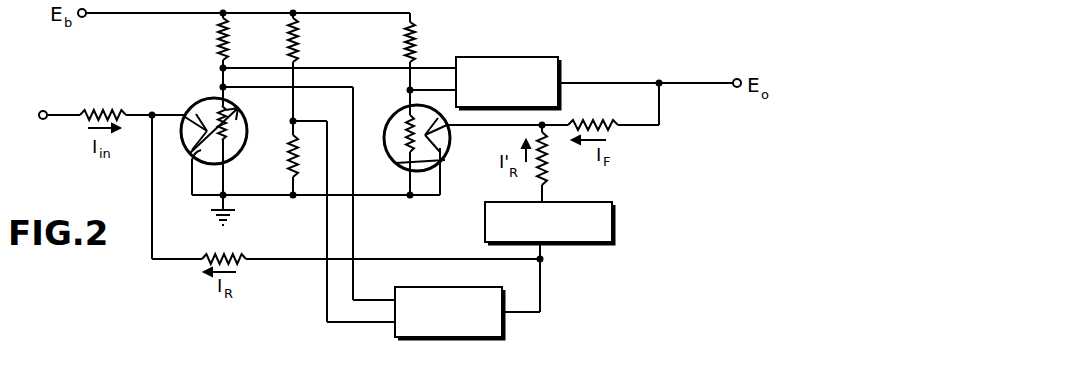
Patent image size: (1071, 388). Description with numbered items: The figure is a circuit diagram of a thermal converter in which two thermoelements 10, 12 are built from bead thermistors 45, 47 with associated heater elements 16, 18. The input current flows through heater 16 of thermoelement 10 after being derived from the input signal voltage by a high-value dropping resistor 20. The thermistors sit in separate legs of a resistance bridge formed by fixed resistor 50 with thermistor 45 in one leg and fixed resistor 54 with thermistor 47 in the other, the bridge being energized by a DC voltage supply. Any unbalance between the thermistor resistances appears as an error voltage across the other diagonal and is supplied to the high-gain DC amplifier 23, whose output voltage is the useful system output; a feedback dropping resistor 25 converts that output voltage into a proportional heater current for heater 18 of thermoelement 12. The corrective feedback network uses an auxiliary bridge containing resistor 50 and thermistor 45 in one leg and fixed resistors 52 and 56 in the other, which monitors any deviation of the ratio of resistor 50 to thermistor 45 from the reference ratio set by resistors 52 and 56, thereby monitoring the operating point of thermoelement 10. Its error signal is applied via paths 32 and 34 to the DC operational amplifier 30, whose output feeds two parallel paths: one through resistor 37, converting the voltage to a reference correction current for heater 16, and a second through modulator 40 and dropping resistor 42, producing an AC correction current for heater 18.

The thermoelement 10 is at (192, 101).
The thermoelement 12 is at (385, 125).
The heater 16 is at (190, 160).
The heater 18 is at (446, 152).
The dropping resistor 20 is at (104, 110).
The DC high-gain amplifier 23 is at (492, 57).
The feedback dropping resistor 25 is at (585, 118).
The DC operational amplifier 30 is at (428, 338).
The path 32 is at (353, 223).
The path 34 is at (327, 297).
The resistor 37 is at (233, 253).
The modulator 40 is at (612, 219).
The dropping resistor 42 is at (548, 166).
The thermistor 45 is at (242, 148).
The thermistor 47 is at (398, 162).
The fixed resistor 50 is at (227, 41).
The fixed resistor 52 is at (299, 49).
The fixed resistor 54 is at (415, 49).
The fixed resistor 56 is at (289, 154).